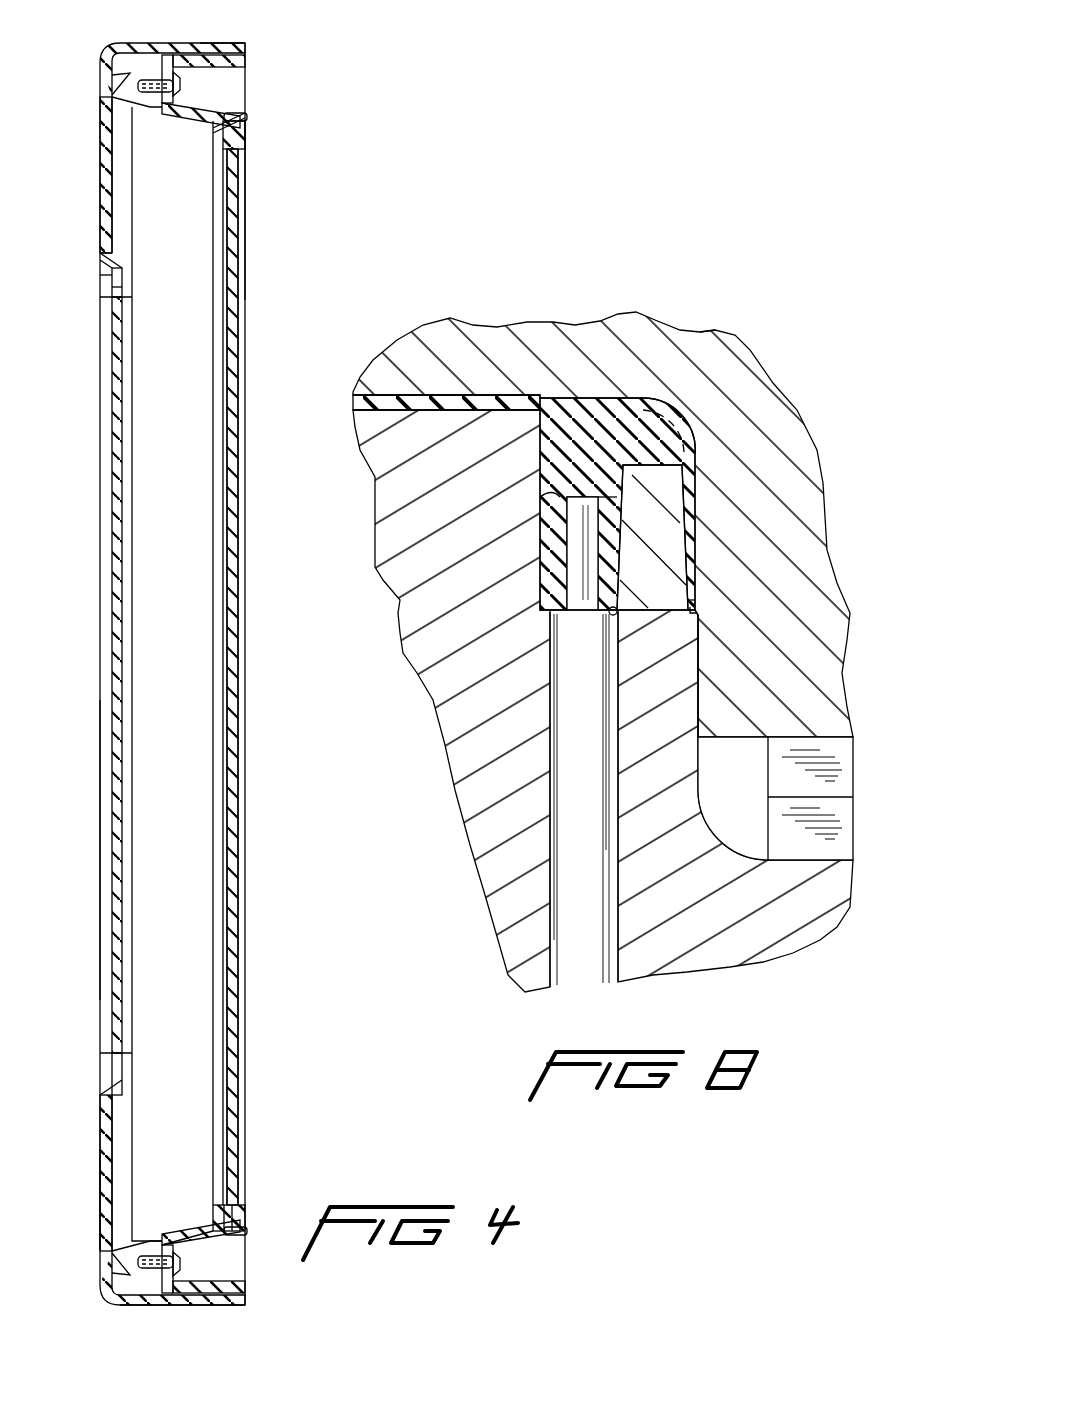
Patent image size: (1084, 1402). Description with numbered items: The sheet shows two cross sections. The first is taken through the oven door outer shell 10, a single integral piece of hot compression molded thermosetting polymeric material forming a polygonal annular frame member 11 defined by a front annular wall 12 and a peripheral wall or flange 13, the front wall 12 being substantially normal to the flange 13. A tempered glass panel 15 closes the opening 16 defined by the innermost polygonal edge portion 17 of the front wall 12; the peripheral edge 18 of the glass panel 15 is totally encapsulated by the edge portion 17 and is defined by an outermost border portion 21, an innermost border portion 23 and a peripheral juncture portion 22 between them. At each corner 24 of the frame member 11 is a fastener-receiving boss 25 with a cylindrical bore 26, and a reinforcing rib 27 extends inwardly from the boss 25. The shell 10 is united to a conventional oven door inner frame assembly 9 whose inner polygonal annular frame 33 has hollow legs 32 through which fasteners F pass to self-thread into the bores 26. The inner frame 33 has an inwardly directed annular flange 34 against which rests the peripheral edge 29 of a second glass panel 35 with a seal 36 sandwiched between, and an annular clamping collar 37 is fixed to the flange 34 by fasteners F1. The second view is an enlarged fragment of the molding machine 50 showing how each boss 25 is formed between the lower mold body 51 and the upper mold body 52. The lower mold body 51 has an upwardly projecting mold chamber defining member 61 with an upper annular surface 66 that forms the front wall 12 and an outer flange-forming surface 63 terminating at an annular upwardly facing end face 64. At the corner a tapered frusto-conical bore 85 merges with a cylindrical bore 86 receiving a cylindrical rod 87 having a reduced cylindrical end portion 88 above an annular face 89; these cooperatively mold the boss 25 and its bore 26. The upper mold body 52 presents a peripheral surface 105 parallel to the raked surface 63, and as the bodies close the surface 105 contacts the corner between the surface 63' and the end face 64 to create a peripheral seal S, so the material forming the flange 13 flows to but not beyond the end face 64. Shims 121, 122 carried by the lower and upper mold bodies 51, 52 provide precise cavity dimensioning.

In FIG. 4, the oven door inner frame assembly 9 is at (278, 197).
In FIG. 4, the oven door outer shell 10 is at (293, 50).
In FIG. 4, the annular frame member 11 is at (96, 1198).
In FIG. 8, the annular frame member 11 is at (416, 396).
In FIG. 4, the front annular wall 12 is at (99, 125).
In FIG. 8, the front annular wall 12 is at (388, 411).
In FIG. 4, the peripheral wall or flange 13 is at (195, 1304).
In FIG. 8, the peripheral wall or flange 13 is at (690, 525).
In FIG. 4, the tempered glass panel 15 is at (126, 630).
In FIG. 4, the opening 16 is at (96, 862).
In FIG. 4, the innermost polygonal edge portion 17 is at (95, 260).
In FIG. 4, the peripheral edge 18 is at (124, 303).
In FIG. 4, the outermost border portion 21 is at (102, 286).
In FIG. 4, the peripheral juncture portion 22 is at (120, 262).
In FIG. 4, the innermost border portion 23 is at (124, 288).
In FIG. 4, the corner 24 is at (108, 52).
In FIG. 8, the corner 24 is at (678, 428).
In FIG. 4, the fastener-receiving boss 25 is at (140, 106).
In FIG. 8, the fastener-receiving boss 25 is at (620, 505).
In FIG. 8, the cylindrical bore 26 is at (556, 618).
In FIG. 4, the reinforcing rib 27 is at (125, 1145).
In FIG. 4, the peripheral edge 29 is at (240, 1222).
In FIG. 4, the hollow leg 32 is at (232, 110).
In FIG. 4, the inner polygonal annular frame 33 is at (210, 1214).
In FIG. 4, the annular flange 34 is at (210, 128).
In FIG. 4, the glass panel 35 is at (236, 1130).
In FIG. 4, the seal 36 is at (222, 152).
In FIG. 4, the annular clamping collar 37 is at (248, 135).
In FIG. 8, the molding machine 50 is at (706, 306).
In FIG. 8, the lower mold body 51 is at (725, 950).
In FIG. 8, the upper mold body 52 is at (746, 360).
In FIG. 8, the mold chamber defining member 61 is at (450, 715).
In FIG. 8, the outer polygonal flange-forming surface 63 is at (688, 536).
In FIG. 8, the flange-forming surface 63' is at (734, 676).
In FIG. 8, the annular upwardly facing end face 64 is at (700, 606).
In FIG. 8, the upper annular surface 66 is at (470, 411).
In FIG. 8, the tapered frusto-conical bore 85 is at (548, 497).
In FIG. 8, the cylindrical bore 86 is at (562, 987).
In FIG. 8, the cylindrical rod 87 is at (600, 983).
In FIG. 8, the reduced cylindrical end portion 88 is at (586, 592).
In FIG. 8, the annular face 89 is at (616, 613).
In FIG. 8, the peripheral surface 105 is at (705, 715).
In FIG. 8, the shim 121 is at (773, 812).
In FIG. 8, the shim 122 is at (773, 760).
In FIG. 4, the fastener F is at (182, 84).
In FIG. 4, the fastener F1 is at (249, 117).
In FIG. 8, the peripheral seal S is at (705, 612).